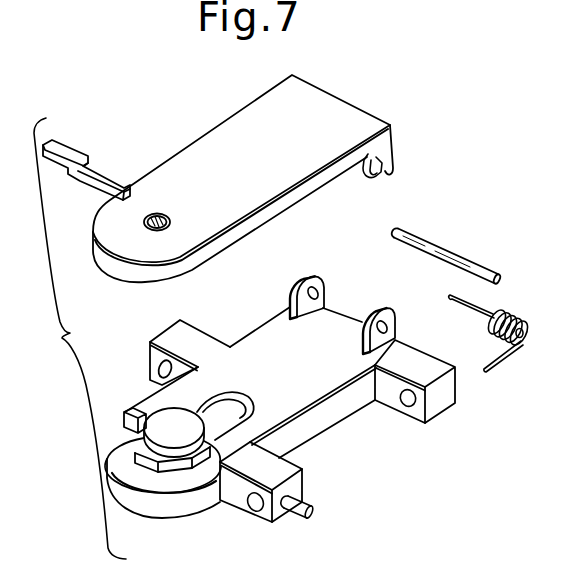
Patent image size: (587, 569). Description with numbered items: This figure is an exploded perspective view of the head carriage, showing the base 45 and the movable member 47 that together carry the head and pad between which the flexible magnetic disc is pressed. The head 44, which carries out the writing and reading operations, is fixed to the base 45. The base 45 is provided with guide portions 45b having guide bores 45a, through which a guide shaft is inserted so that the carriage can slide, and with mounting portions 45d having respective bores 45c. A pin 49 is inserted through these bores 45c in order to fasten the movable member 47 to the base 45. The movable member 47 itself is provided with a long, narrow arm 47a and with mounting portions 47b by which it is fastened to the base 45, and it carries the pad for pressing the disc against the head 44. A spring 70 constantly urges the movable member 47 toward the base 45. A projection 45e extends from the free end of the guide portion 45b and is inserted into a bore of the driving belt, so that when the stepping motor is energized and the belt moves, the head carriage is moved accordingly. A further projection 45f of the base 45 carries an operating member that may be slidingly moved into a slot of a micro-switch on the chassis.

The head 44 is at (157, 428).
The base 45 is at (347, 426).
The guide bores 45a is at (410, 401).
The guide portions 45b is at (455, 366).
The bores 45c is at (318, 293).
The mounting portions 45d is at (290, 290).
The projection 45e is at (300, 510).
The projection 45f is at (190, 340).
The movable member 47 is at (170, 155).
The arm 47a is at (78, 155).
The mounting portions 47b is at (384, 175).
The pin 49 is at (452, 262).
The spring 70 is at (541, 304).